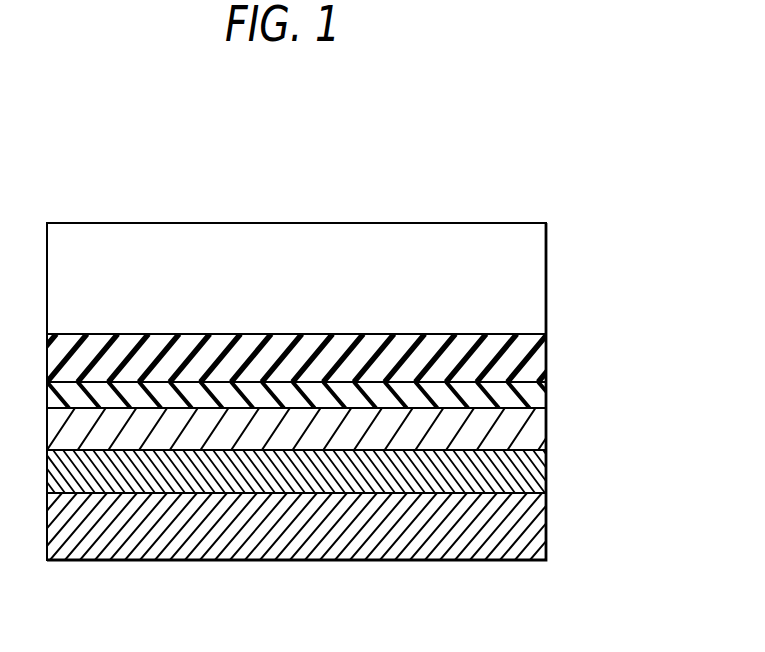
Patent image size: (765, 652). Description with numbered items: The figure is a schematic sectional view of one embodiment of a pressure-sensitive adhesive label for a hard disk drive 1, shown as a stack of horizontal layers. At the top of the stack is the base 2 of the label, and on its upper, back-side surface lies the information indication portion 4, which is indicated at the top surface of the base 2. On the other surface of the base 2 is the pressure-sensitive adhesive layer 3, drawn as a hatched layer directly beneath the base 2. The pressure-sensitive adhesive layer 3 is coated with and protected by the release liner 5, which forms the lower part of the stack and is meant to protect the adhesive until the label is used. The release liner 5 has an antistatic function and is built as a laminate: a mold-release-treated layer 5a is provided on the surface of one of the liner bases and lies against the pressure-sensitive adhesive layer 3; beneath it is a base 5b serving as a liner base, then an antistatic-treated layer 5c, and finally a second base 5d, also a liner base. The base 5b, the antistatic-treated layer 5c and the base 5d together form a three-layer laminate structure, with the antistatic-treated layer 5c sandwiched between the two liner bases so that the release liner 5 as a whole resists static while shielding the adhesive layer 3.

The pressure-sensitive adhesive label for a hard disk drive 1 is at (357, 190).
The base 2 is at (547, 249).
The pressure-sensitive adhesive layer 3 is at (547, 352).
The information indication portion 4 is at (146, 223).
The release liner 5 is at (337, 470).
The mold-release-treated layer 5a is at (547, 390).
The base (liner base) 5b is at (547, 438).
The antistatic-treated layer 5c is at (547, 476).
The base (liner base) 5d is at (306, 526).